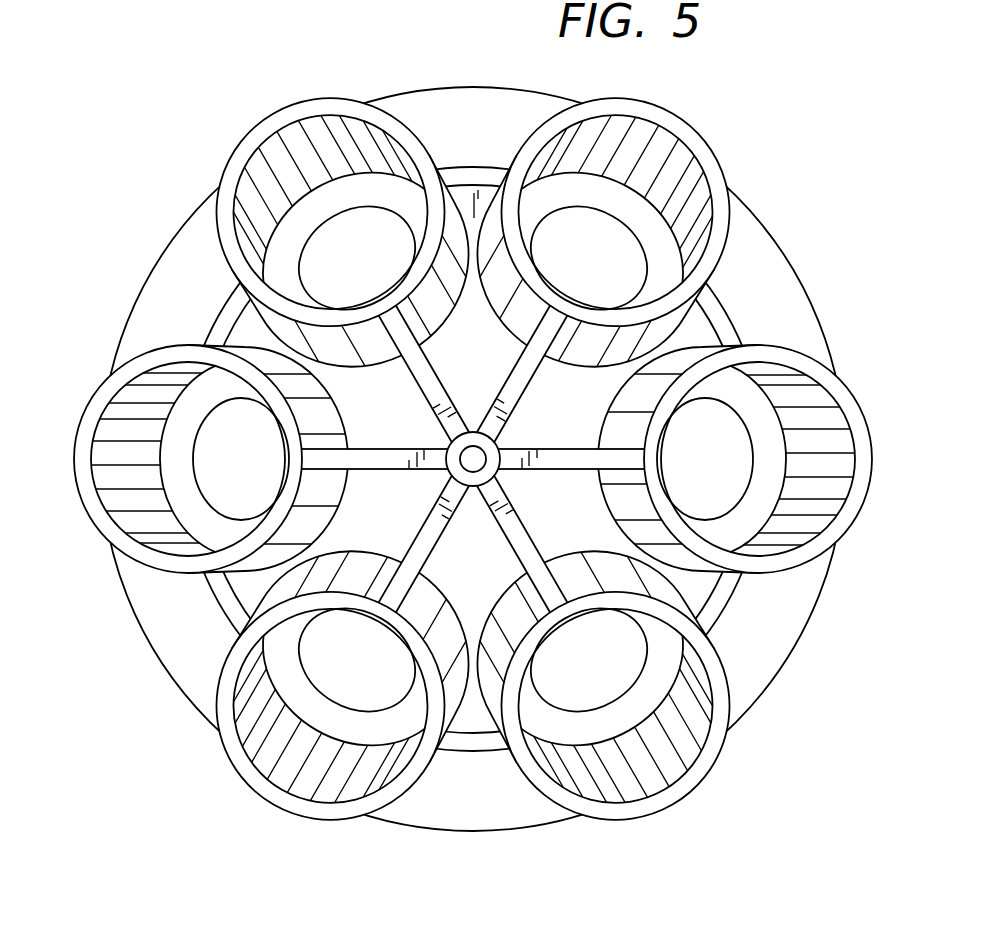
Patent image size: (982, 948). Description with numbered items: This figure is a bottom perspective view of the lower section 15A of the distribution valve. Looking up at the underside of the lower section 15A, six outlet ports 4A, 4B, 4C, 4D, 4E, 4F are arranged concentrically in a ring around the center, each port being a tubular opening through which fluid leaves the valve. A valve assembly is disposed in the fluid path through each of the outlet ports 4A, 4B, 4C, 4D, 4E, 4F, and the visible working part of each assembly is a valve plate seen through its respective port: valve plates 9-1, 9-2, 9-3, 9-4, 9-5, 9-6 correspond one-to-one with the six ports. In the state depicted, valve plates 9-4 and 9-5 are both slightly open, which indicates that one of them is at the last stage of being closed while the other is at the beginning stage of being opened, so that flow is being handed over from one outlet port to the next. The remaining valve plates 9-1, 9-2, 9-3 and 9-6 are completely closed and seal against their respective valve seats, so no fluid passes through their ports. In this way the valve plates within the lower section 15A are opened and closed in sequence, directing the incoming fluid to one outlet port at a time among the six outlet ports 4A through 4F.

The outlet port 4A is at (287, 772).
The outlet port 4B is at (105, 455).
The outlet port 4C is at (298, 132).
The outlet port 4D is at (663, 140).
The outlet port 4E is at (843, 465).
The outlet port 4F is at (652, 780).
The valve plate 9-1 is at (331, 662).
The valve plate 9-2 is at (223, 461).
The valve plate 9-3 is at (332, 272).
The valve plate 9-4 is at (547, 272).
The valve plate 9-5 is at (676, 470).
The valve plate 9-6 is at (561, 662).
The lower section 15A is at (166, 834).